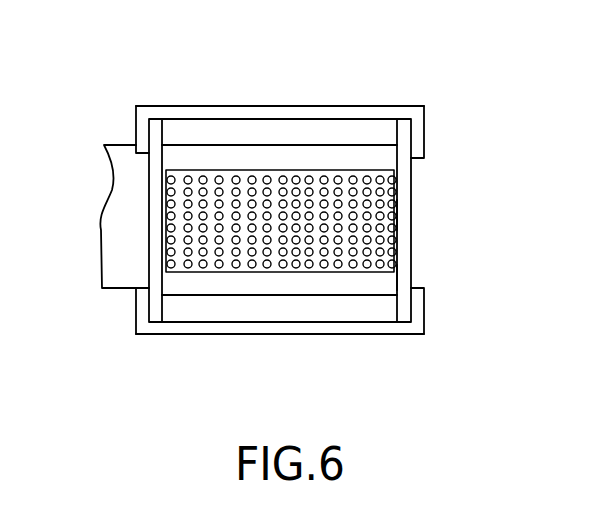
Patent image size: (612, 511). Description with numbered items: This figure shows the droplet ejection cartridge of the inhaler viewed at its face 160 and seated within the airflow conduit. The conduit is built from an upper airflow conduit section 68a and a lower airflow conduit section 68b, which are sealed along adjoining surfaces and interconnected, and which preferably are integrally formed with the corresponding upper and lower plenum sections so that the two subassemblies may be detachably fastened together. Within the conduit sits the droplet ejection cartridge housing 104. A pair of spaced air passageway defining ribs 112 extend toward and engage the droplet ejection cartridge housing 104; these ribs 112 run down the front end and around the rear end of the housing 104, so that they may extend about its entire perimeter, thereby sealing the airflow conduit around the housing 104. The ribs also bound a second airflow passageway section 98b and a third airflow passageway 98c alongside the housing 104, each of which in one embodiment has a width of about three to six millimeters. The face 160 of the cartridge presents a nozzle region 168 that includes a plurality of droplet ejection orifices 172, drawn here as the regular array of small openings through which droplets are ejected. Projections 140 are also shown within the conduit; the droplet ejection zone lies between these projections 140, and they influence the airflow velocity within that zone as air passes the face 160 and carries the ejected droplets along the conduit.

The upper airflow conduit section 68a is at (376, 107).
The lower airflow conduit section 68b is at (370, 334).
The second airflow passageway section 98b is at (268, 133).
The third airflow passageway 98c is at (287, 308).
The droplet ejection cartridge housing 104 is at (396, 279).
The air passageway defining ribs 112 is at (152, 181).
The projections 140 is at (298, 157).
The face 160 is at (397, 173).
The nozzle region 168 is at (398, 215).
The droplet ejection orifices 172 is at (167, 215).